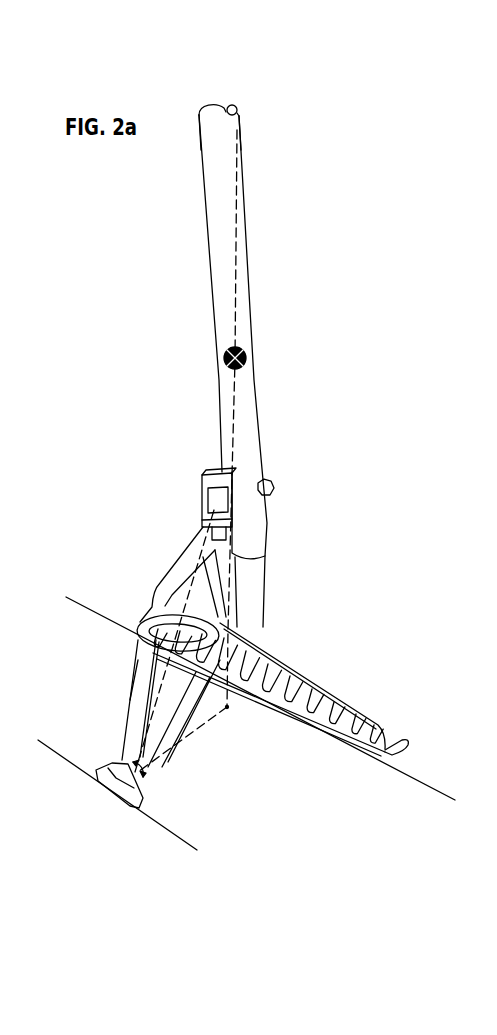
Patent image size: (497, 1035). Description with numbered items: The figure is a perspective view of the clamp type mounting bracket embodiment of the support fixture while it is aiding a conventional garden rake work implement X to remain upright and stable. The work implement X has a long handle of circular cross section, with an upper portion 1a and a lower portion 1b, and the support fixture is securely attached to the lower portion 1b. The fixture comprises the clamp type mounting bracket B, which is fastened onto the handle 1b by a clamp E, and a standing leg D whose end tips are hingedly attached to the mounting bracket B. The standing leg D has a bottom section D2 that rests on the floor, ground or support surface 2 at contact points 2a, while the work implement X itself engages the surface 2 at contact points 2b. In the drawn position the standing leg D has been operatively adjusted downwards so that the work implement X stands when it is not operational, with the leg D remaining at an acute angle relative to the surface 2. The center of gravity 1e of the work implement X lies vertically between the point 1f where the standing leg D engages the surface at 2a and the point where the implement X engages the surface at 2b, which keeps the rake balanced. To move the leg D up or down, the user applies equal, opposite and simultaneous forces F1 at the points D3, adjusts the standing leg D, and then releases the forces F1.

The garden rake work implement X is at (205, 81).
The upper portion of handle 1a is at (238, 133).
The center of gravity 1e is at (244, 353).
The lower portion of handle 1b is at (258, 438).
The clamp E is at (273, 487).
The clamp type mounting bracket B is at (190, 483).
The force application points D3 is at (150, 576).
The forces F1 is at (142, 581).
The standing leg D is at (110, 696).
The bottom section of standing leg D2 is at (100, 765).
The contact point of standing leg 1f is at (229, 707).
The floor, ground or support surface 2 is at (253, 712).
The contact points of work implement 2b is at (383, 749).
The contact points of standing leg 2a is at (125, 765).